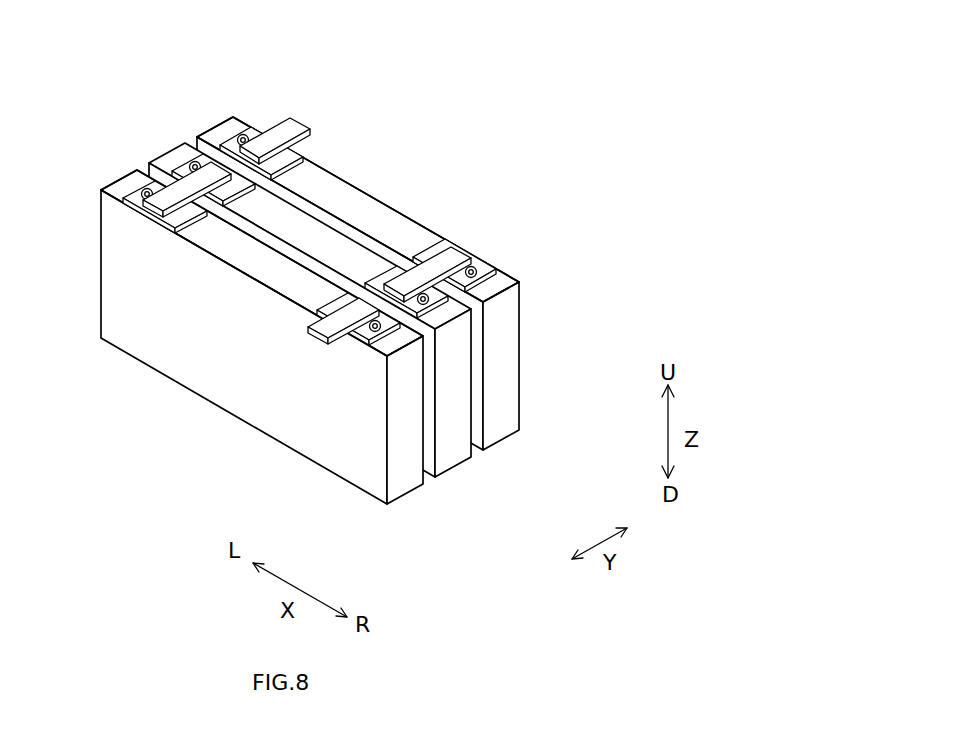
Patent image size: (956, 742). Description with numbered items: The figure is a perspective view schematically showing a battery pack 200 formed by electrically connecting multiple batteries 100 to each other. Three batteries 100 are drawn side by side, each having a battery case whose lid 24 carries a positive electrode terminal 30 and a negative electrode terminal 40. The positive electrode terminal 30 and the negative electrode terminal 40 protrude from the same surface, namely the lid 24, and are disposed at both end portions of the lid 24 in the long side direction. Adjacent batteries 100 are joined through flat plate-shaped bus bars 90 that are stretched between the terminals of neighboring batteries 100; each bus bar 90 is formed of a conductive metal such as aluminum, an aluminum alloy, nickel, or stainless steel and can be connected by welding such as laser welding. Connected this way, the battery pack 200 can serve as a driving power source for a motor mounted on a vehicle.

The battery pack 200 is at (92, 62).
The battery 100 is at (528, 313).
The lid 24 is at (283, 217).
The positive electrode terminal 30 is at (180, 165).
The negative electrode terminal 40 is at (137, 193).
The bus bar 90 is at (176, 192).